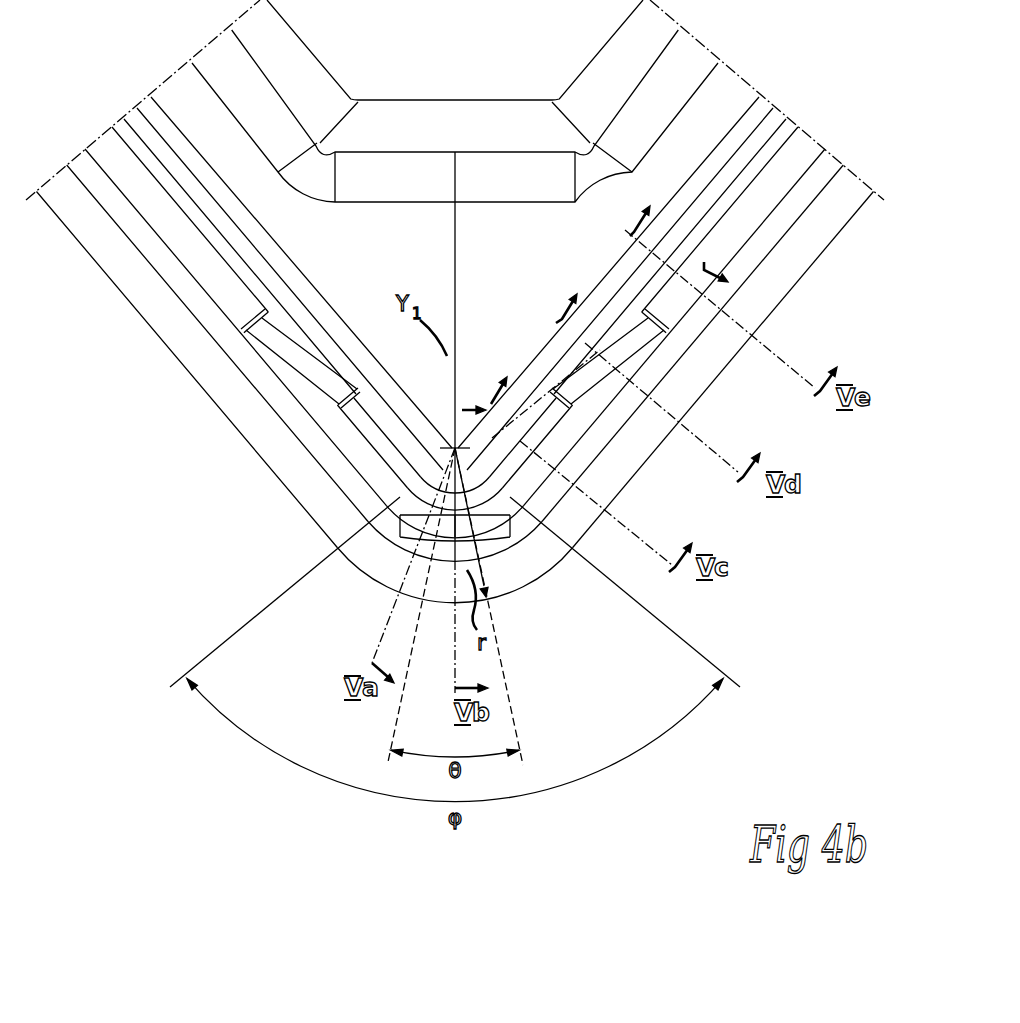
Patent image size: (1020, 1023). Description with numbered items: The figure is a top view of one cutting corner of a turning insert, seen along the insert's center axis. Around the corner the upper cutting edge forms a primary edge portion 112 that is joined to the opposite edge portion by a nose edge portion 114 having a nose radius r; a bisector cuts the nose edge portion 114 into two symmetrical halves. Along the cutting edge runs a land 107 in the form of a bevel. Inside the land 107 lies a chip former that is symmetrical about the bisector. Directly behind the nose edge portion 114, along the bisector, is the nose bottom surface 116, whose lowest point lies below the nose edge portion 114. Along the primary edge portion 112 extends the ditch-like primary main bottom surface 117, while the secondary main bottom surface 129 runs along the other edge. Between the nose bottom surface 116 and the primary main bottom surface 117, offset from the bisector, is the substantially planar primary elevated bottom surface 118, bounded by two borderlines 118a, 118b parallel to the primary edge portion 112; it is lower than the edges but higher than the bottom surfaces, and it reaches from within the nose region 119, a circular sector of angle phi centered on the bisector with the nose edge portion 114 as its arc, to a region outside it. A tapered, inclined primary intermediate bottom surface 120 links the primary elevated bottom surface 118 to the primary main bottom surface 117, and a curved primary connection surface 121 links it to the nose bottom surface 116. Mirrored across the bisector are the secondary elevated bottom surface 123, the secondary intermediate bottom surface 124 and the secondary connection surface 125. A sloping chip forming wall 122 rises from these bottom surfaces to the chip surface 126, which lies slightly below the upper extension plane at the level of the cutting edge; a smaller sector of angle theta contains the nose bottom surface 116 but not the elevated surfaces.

The land 107 is at (777, 280).
The primary edge portion 112 is at (697, 403).
The nose edge portion 114 is at (518, 588).
The nose bottom surface 116 is at (452, 545).
The primary main bottom surface 117 is at (755, 208).
The primary elevated bottom surface 118 is at (568, 440).
The borderline 118a is at (542, 420).
The borderline 118b is at (568, 490).
The nose region 119 is at (520, 572).
The primary intermediate bottom surface 120 is at (600, 405).
The primary connection surface 121 is at (488, 507).
The chip forming wall 122 is at (770, 126).
The secondary elevated bottom surface 123 is at (358, 463).
The secondary intermediate bottom surface 124 is at (305, 392).
The secondary connection surface 125 is at (425, 503).
The chip surface 126 is at (527, 278).
The secondary main bottom surface 129 is at (205, 262).